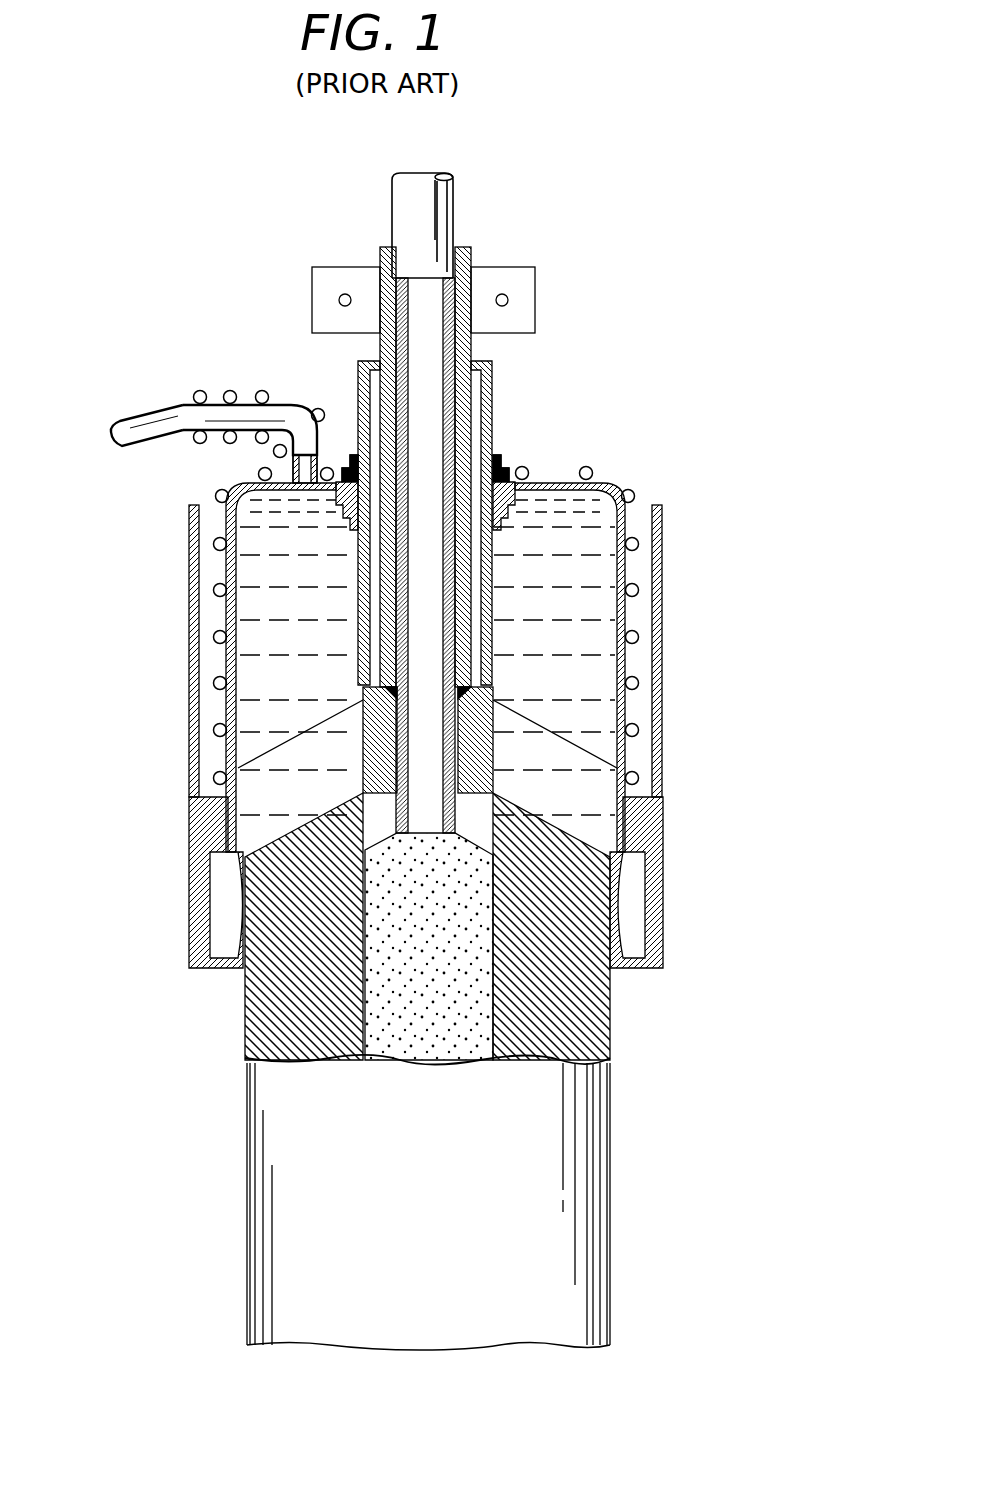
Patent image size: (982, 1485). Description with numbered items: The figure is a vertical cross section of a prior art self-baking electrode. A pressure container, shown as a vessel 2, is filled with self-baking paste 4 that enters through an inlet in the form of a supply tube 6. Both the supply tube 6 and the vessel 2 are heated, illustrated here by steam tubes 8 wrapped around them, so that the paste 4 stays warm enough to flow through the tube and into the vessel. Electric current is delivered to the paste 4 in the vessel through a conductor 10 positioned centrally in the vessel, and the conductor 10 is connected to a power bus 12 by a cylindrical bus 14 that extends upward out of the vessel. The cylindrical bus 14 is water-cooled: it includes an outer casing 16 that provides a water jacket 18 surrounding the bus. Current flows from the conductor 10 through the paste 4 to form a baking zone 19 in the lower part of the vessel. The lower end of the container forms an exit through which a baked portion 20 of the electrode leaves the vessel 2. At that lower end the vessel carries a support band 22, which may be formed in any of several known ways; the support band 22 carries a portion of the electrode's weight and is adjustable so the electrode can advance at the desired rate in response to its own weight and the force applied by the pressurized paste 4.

The vessel 2 is at (603, 482).
The self-baking paste 4 is at (597, 602).
The supply tube 6 is at (140, 408).
The steam tubes 8 is at (257, 398).
The conductor 10 is at (493, 742).
The power bus 12 is at (530, 301).
The cylindrical bus 14 is at (379, 262).
The outer casing 16 is at (492, 412).
The water jacket 18 is at (375, 402).
The baking zone 19 is at (285, 797).
The baked portion 20 is at (390, 1135).
The support band 22 is at (663, 837).